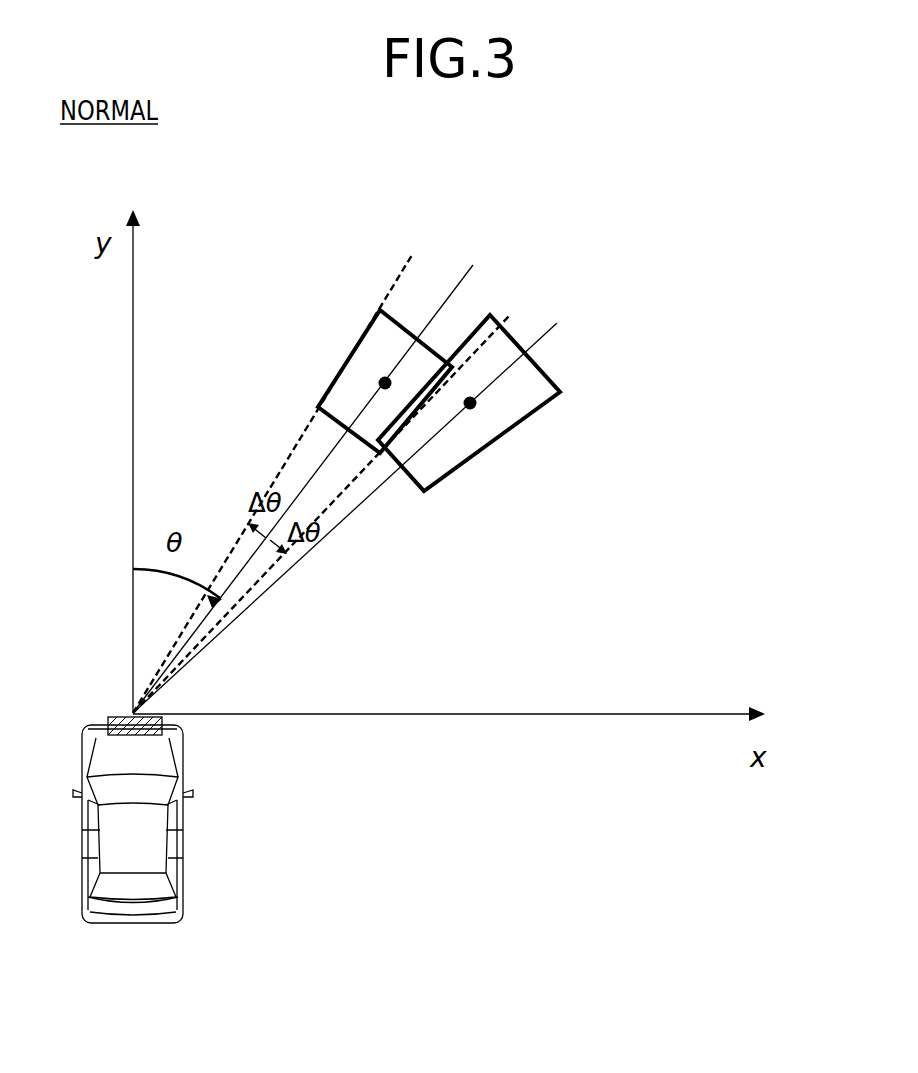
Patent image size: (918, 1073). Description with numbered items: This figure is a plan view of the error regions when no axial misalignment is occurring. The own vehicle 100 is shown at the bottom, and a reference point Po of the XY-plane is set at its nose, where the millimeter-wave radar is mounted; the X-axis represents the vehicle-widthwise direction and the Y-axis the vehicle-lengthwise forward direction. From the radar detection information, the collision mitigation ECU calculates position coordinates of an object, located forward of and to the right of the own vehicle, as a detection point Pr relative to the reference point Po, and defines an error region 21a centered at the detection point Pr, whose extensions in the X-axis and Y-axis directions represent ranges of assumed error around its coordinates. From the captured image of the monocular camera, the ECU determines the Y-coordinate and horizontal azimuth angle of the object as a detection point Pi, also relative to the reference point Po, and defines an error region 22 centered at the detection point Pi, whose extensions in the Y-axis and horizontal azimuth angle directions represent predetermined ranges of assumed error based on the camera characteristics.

The error region 21a is at (357, 371).
The error region 22 is at (477, 437).
The vehicle 100 is at (185, 758).
The reference point Po is at (133, 712).
The detection point Pr is at (386, 376).
The detection point Pi is at (477, 403).